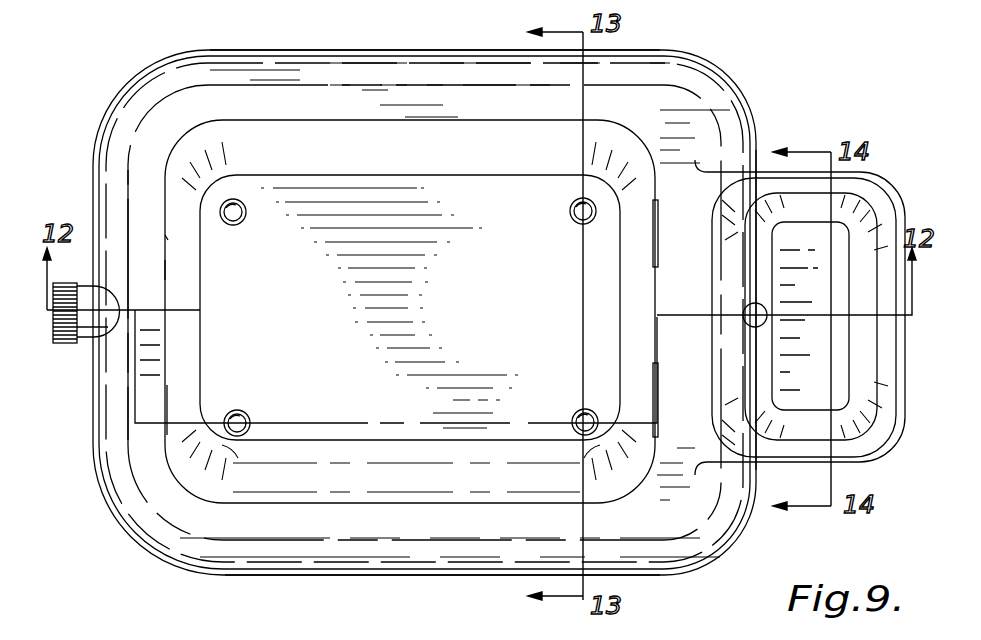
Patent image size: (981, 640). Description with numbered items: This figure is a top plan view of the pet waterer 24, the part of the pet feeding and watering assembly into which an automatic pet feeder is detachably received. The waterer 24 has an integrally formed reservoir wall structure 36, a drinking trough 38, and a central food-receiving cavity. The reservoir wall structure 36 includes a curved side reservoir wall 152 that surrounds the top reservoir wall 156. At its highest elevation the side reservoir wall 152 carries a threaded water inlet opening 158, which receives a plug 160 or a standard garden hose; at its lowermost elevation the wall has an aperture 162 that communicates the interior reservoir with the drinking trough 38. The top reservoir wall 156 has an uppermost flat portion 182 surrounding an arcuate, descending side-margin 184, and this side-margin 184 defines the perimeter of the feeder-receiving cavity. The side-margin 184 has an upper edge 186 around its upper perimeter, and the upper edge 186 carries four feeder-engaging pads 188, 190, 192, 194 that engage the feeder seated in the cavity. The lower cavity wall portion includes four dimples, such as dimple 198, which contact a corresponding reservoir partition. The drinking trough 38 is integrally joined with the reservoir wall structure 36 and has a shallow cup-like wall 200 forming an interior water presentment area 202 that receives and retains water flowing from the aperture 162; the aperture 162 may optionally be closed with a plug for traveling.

The pet waterer 24 is at (436, 40).
The reservoir wall structure 36 is at (716, 72).
The drinking trough 38 is at (842, 250).
The side reservoir wall 152 is at (320, 50).
The top reservoir wall 156 is at (250, 196).
The threaded water inlet opening 158 is at (83, 284).
The plug 160 is at (63, 343).
The aperture 162 is at (743, 311).
The uppermost flat portion 182 is at (290, 553).
The descending side-margin 184 is at (510, 149).
The upper edge 186 is at (408, 124).
The feeder-engaging pad 188 is at (168, 238).
The feeder-engaging pad 190 is at (170, 388).
The feeder-engaging pad 192 is at (643, 248).
The feeder-engaging pad 194 is at (650, 390).
The dimple 198 is at (242, 224).
The cup-like wall 200 is at (856, 463).
The water presentment area 202 is at (786, 385).